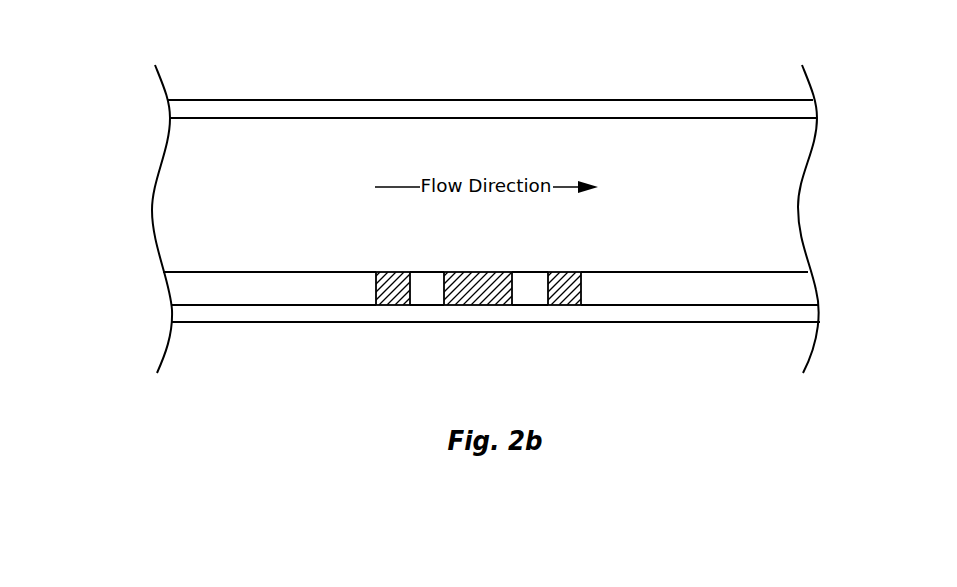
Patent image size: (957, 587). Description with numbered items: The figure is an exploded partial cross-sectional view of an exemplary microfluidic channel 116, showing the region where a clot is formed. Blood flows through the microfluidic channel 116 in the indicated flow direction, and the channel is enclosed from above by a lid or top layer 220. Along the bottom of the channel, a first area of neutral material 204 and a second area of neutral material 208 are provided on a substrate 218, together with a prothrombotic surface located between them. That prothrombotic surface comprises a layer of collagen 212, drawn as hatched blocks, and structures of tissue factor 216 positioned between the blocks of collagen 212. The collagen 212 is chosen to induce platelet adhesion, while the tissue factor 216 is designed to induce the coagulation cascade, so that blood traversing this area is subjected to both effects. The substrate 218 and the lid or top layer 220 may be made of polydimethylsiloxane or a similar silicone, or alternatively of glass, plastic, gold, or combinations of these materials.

The microfluidic channel 116 is at (740, 190).
The lid or top layer 220 is at (178, 109).
The substrate 218 is at (180, 312).
The first area of neutral material 204 is at (240, 288).
The second area of neutral material 208 is at (690, 288).
The collagen 212 is at (375, 293).
The tissue factor 216 is at (432, 289).